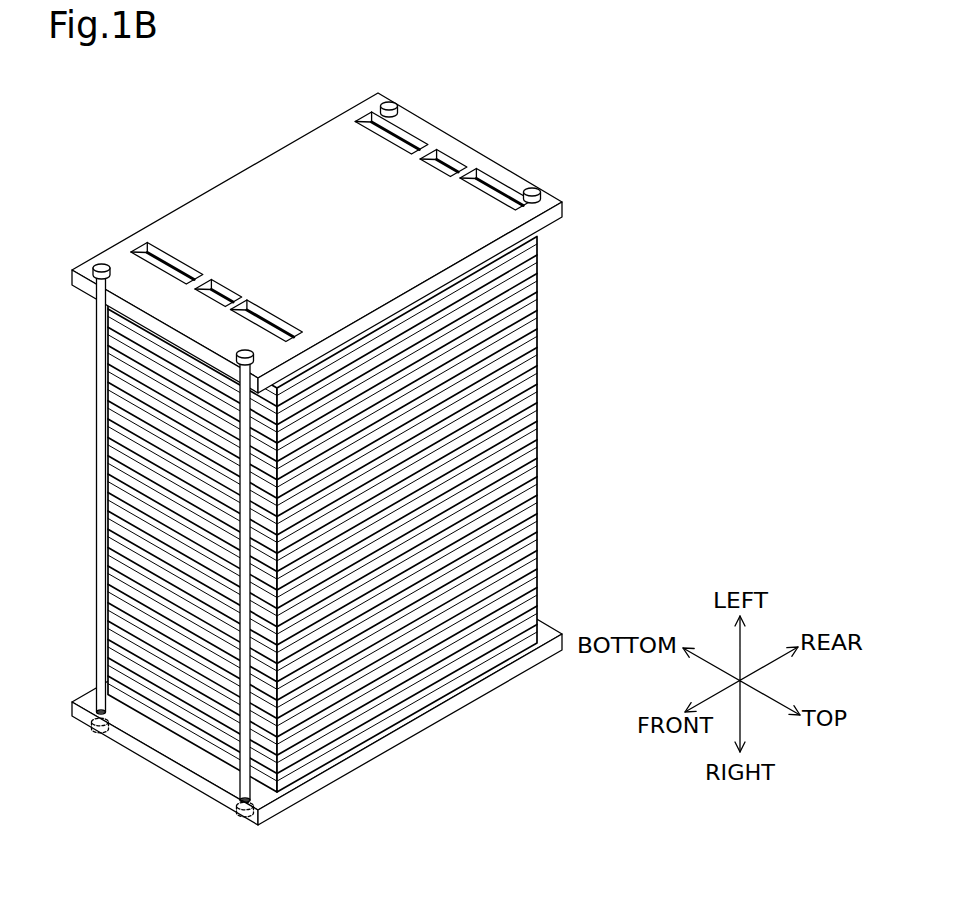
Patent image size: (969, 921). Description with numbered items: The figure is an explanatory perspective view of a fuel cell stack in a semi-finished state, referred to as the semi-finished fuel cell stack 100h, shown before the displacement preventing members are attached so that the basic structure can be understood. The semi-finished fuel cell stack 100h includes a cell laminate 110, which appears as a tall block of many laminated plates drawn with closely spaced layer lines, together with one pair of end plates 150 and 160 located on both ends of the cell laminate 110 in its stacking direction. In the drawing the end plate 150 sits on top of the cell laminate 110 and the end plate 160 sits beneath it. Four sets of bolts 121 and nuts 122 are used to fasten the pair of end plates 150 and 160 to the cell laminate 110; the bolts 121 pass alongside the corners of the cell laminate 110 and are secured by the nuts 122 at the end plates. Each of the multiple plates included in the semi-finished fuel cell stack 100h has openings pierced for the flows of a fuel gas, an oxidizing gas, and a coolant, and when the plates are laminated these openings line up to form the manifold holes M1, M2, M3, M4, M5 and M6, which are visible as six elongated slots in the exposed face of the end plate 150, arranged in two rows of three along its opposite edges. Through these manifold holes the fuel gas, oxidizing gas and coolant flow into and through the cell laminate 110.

The semi-finished fuel cell stack 100h is at (523, 90).
The cell laminate 110 is at (513, 375).
The bolt 121 is at (390, 100).
The nut 122 is at (100, 736).
The end plate 150 is at (247, 177).
The end plate 160 is at (297, 793).
The manifold hole M1 is at (138, 252).
The manifold hole M2 is at (200, 291).
The manifold hole M3 is at (240, 310).
The manifold hole M4 is at (497, 193).
The manifold hole M5 is at (440, 162).
The manifold hole M6 is at (408, 142).